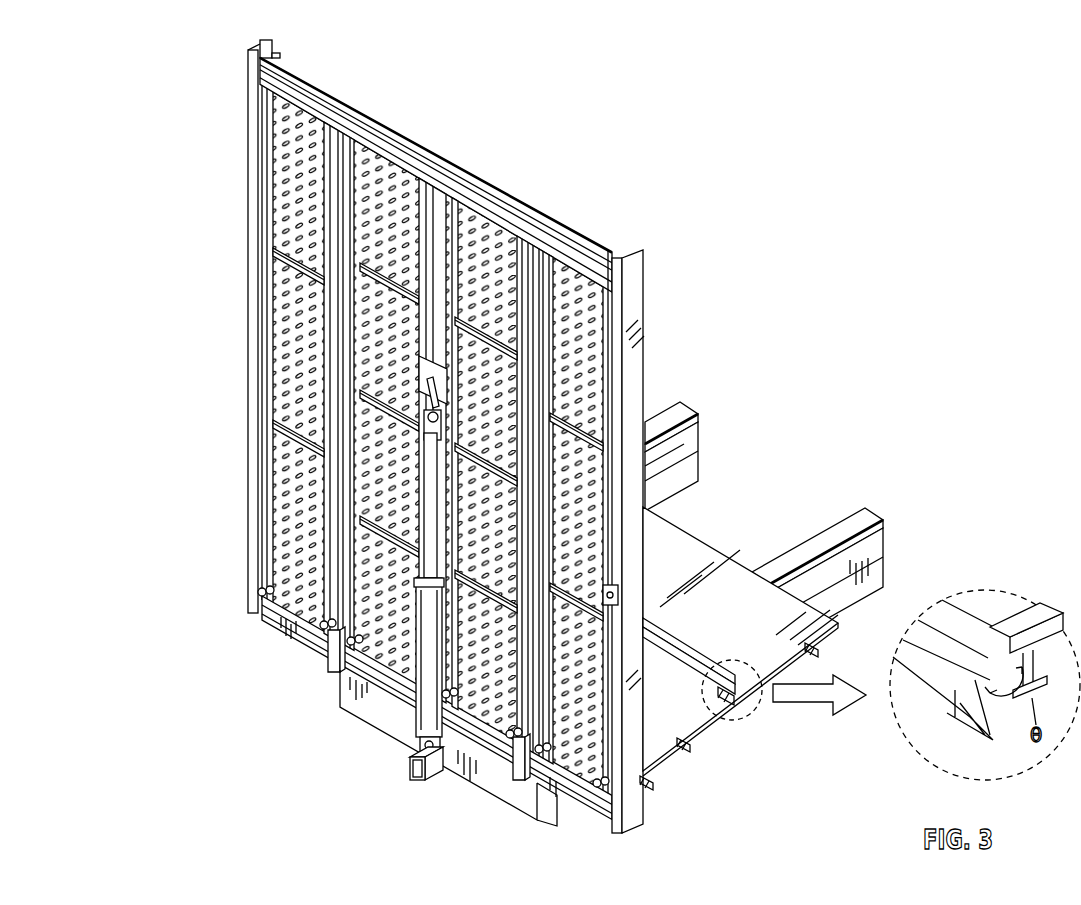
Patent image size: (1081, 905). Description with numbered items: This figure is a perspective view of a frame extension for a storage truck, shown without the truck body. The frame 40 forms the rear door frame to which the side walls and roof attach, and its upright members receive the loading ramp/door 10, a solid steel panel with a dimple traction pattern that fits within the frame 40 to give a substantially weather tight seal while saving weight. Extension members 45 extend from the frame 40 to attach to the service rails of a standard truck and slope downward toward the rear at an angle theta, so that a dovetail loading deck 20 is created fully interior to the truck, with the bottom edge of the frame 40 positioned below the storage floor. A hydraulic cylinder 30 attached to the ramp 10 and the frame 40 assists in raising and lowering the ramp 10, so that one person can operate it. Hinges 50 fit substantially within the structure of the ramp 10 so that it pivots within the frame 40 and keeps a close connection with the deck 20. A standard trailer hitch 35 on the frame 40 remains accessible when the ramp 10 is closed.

The loading ramp/door 10 is at (274, 468).
The dovetail loading deck 20 is at (697, 716).
The hydraulic cylinder 30 is at (414, 697).
The trailer hitch 35 is at (418, 783).
The frame 40 is at (247, 192).
The extension members 45 is at (697, 433).
The hinges 50 is at (262, 593).